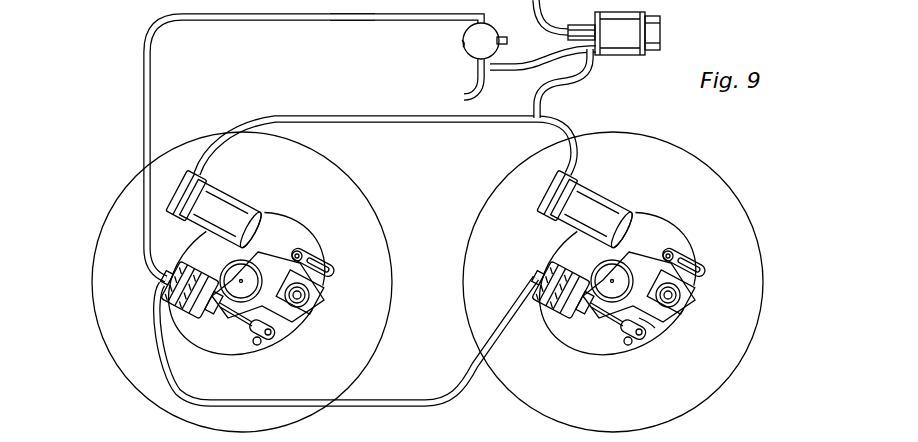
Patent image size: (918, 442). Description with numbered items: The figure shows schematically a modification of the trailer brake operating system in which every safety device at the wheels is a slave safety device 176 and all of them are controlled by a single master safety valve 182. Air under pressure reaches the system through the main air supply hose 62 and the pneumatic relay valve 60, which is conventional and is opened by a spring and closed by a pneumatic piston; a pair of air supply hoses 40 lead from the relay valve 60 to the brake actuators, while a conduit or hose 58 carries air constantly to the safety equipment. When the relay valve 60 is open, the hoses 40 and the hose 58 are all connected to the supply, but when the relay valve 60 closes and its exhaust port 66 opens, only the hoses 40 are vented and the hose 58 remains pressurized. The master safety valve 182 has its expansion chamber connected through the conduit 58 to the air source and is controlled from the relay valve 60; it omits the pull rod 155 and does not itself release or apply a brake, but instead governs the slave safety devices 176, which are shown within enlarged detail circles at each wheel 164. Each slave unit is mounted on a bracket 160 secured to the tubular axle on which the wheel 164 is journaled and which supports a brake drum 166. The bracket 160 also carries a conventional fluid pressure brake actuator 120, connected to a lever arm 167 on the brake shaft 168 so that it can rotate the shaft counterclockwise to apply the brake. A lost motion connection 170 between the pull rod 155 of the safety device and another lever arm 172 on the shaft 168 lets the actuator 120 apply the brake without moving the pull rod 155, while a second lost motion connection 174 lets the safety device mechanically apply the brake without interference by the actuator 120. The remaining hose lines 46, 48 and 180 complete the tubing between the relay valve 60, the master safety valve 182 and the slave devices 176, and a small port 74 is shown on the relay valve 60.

The air supply hoses 40 is at (289, 21).
The tube section 46 is at (348, 16).
The supply tube 48 is at (647, 16).
The hose 58 is at (532, 64).
The pneumatic relay valve 60 is at (470, 30).
The main air supply hose 62 is at (465, 88).
The exhaust port 66 is at (464, 43).
The valve port 74 is at (504, 39).
The fluid pressure brake actuator 120 is at (198, 306).
The pull rod 155 is at (648, 252).
The bracket 160 is at (266, 253).
The wheel 164 is at (374, 206).
The brake drum 166 is at (253, 358).
The lever arm 167 is at (655, 327).
The brake shaft 168 is at (300, 302).
The lost motion connection 170 is at (330, 268).
The lever arm 172 is at (316, 286).
The lost motion connection 174 is at (278, 336).
The slave safety devices 176 is at (243, 203).
The cylinder supply tube 180 is at (420, 122).
The master safety valve 182 is at (652, 22).